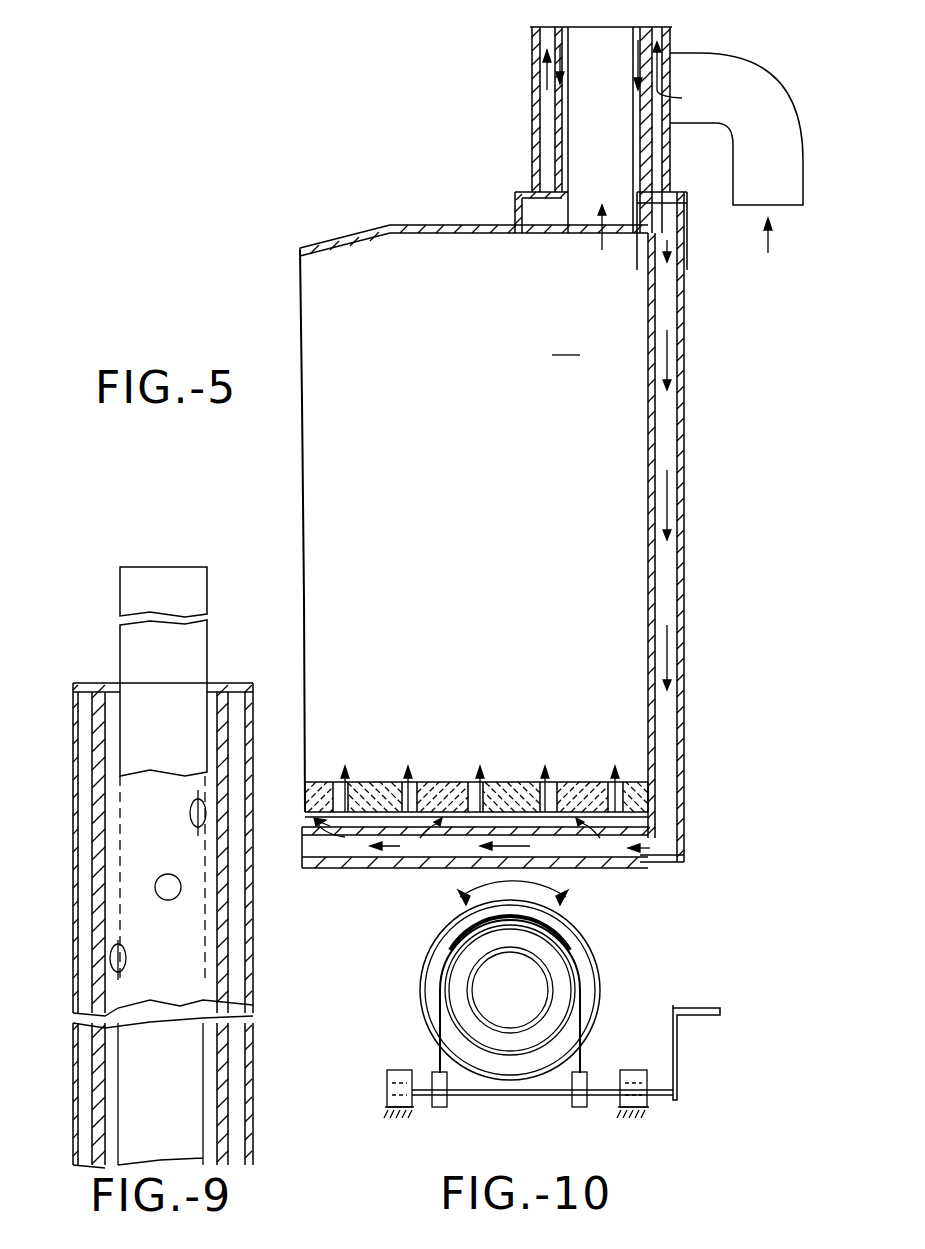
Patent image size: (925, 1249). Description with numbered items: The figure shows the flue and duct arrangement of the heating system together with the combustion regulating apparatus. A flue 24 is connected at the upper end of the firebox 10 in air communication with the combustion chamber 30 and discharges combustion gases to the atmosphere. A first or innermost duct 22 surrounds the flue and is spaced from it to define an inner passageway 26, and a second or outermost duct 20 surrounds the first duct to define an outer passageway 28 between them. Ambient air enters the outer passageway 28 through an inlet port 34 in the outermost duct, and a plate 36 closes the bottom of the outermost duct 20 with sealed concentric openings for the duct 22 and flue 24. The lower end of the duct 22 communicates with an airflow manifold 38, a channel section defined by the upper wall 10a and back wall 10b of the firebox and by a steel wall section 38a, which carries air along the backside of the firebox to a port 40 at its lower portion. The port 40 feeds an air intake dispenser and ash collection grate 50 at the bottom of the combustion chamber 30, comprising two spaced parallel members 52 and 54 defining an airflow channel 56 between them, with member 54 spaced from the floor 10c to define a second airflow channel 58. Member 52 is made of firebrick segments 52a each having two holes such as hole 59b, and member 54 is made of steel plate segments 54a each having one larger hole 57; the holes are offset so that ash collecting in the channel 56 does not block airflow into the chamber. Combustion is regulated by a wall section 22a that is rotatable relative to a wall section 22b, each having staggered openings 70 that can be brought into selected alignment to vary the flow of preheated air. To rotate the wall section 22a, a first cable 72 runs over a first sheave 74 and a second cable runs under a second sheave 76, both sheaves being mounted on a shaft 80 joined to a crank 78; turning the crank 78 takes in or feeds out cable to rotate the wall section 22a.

In FIG. 5, the firebox 10 is at (352, 200).
In FIG. 5, the upper wall of the firebox 10a is at (472, 230).
In FIG. 5, the back wall of the firebox 10b is at (656, 408).
In FIG. 5, the floor or bottom surface of the firebox 10c is at (571, 866).
In FIG. 5, the second or outermost duct 20 is at (536, 79).
In FIG. 9, the second or outermost duct 20 is at (76, 779).
In FIG. 10, the second or outermost duct 20 is at (590, 958).
In FIG. 5, the first or innermost duct 22 is at (666, 45).
In FIG. 9, the first or innermost duct 22 is at (230, 967).
In FIG. 9, the wall section 22a is at (228, 1036).
In FIG. 10, the wall section 22a is at (582, 996).
In FIG. 9, the wall section 22b is at (225, 1089).
In FIG. 10, the wall section 22b is at (462, 966).
In FIG. 5, the flue 24 is at (559, 211).
In FIG. 9, the flue 24 is at (199, 641).
In FIG. 10, the flue 24 is at (470, 991).
In FIG. 5, the inner passageway 26 is at (558, 109).
In FIG. 10, the inner passageway 26 is at (555, 966).
In FIG. 5, the outer passageway 28 is at (538, 43).
In FIG. 10, the outer passageway 28 is at (586, 981).
In FIG. 5, the combustion chamber 30 is at (566, 344).
In FIG. 5, the inlet port 34 is at (750, 63).
In FIG. 5, the second plate or member 36 is at (676, 194).
In FIG. 5, the airflow manifold or channel section 38 is at (686, 491).
In FIG. 5, the wall section 38a is at (686, 758).
In FIG. 5, the port or opening 40 is at (660, 849).
In FIG. 5, the air intake dispenser and ash collection grate 50 is at (376, 748).
In FIG. 5, the member 52 is at (455, 790).
In FIG. 5, the segmented sections or units 52a is at (430, 790).
In FIG. 5, the member 54 is at (490, 850).
In FIG. 5, the segmented sections or units 54a is at (355, 843).
In FIG. 5, the airflow channel 56 is at (304, 828).
In FIG. 5, the opening or hole 57 is at (445, 836).
In FIG. 5, the second airflow channel 58 is at (331, 858).
In FIG. 5, the hole 59b is at (470, 812).
In FIG. 9, the openings 70 is at (200, 816).
In FIG. 10, the first cable 72 is at (583, 1053).
In FIG. 10, the first sheave 74 is at (436, 1048).
In FIG. 10, the second sheave 76 is at (437, 1100).
In FIG. 10, the crank 78 is at (705, 1019).
In FIG. 10, the shaft 80 is at (520, 1094).